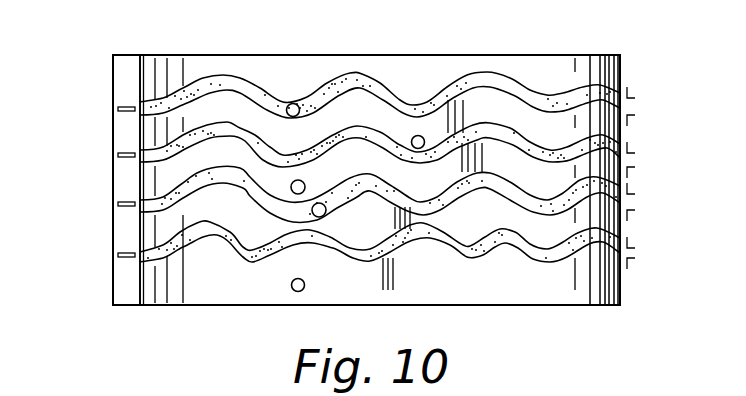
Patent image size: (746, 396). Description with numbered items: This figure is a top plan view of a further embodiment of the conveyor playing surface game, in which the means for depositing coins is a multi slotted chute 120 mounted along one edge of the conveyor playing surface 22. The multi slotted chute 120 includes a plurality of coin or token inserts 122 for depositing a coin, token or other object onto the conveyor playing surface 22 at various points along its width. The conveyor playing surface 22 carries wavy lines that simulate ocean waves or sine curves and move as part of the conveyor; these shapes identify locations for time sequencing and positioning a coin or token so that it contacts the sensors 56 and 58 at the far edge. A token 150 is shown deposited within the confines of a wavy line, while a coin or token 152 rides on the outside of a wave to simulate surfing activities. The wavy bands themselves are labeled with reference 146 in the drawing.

The conveyor playing surface 22 is at (547, 285).
The sensor 56 is at (628, 98).
The sensor 58 is at (628, 117).
The multi slotted chute 120 is at (114, 182).
The coin or token inserts 122 is at (118, 156).
The wavy adhesive bands 146 is at (220, 92).
The token 150 is at (293, 103).
The coin or token 152 is at (418, 135).